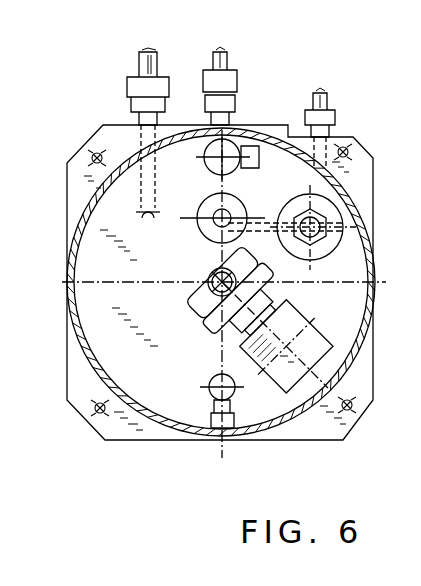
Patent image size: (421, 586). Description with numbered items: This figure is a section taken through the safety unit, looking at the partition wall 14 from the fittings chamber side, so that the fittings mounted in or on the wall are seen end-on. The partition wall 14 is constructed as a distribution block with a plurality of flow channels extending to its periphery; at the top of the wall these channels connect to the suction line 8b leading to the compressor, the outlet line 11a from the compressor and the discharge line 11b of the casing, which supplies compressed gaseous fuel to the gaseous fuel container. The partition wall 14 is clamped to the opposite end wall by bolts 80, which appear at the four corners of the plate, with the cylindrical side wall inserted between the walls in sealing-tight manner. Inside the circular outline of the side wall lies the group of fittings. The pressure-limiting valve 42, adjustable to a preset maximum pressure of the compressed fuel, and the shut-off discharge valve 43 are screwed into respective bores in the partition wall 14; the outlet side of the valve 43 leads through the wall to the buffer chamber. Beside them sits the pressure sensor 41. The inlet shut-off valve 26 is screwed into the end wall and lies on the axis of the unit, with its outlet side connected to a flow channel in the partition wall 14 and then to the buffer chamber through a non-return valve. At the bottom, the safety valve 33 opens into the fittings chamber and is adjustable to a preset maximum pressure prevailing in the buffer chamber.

The partition wall 14 is at (117, 135).
The bolts 80 is at (343, 143).
The suction line 8b is at (142, 68).
The outlet line 11a is at (215, 67).
The discharge line 11b is at (313, 100).
The pressure-limiting valve 42 is at (205, 160).
The shut-off discharge valve 43 is at (292, 212).
The pressure sensor 41 is at (205, 228).
The inlet shut-off valve 26 is at (300, 325).
The safety valve 33 is at (212, 375).